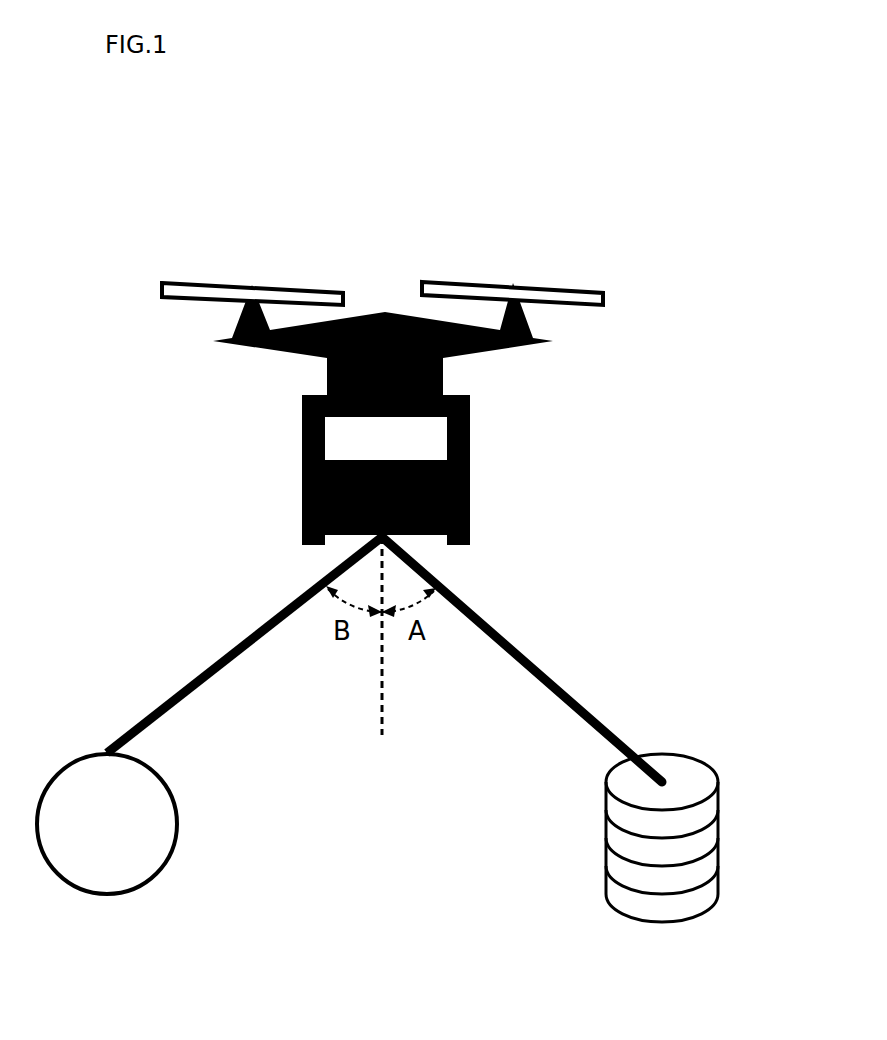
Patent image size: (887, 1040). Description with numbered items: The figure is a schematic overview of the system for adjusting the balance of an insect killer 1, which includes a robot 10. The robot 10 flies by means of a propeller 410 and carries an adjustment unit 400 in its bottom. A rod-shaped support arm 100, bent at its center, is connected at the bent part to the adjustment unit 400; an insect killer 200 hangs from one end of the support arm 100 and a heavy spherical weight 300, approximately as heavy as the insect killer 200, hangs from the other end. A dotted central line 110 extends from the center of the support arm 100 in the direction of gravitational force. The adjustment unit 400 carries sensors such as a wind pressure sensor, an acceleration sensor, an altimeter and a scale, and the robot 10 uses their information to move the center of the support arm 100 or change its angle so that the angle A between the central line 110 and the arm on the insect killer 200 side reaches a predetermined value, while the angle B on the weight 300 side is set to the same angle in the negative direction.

The system for adjusting the balance of an insect killer 1 is at (545, 218).
The robot 10 is at (382, 312).
The propeller 410 is at (330, 297).
The adjustment unit 400 is at (470, 487).
The support arm 100 is at (522, 650).
The central line 110 is at (382, 668).
The weight 300 is at (162, 797).
The insect killer 200 is at (693, 770).